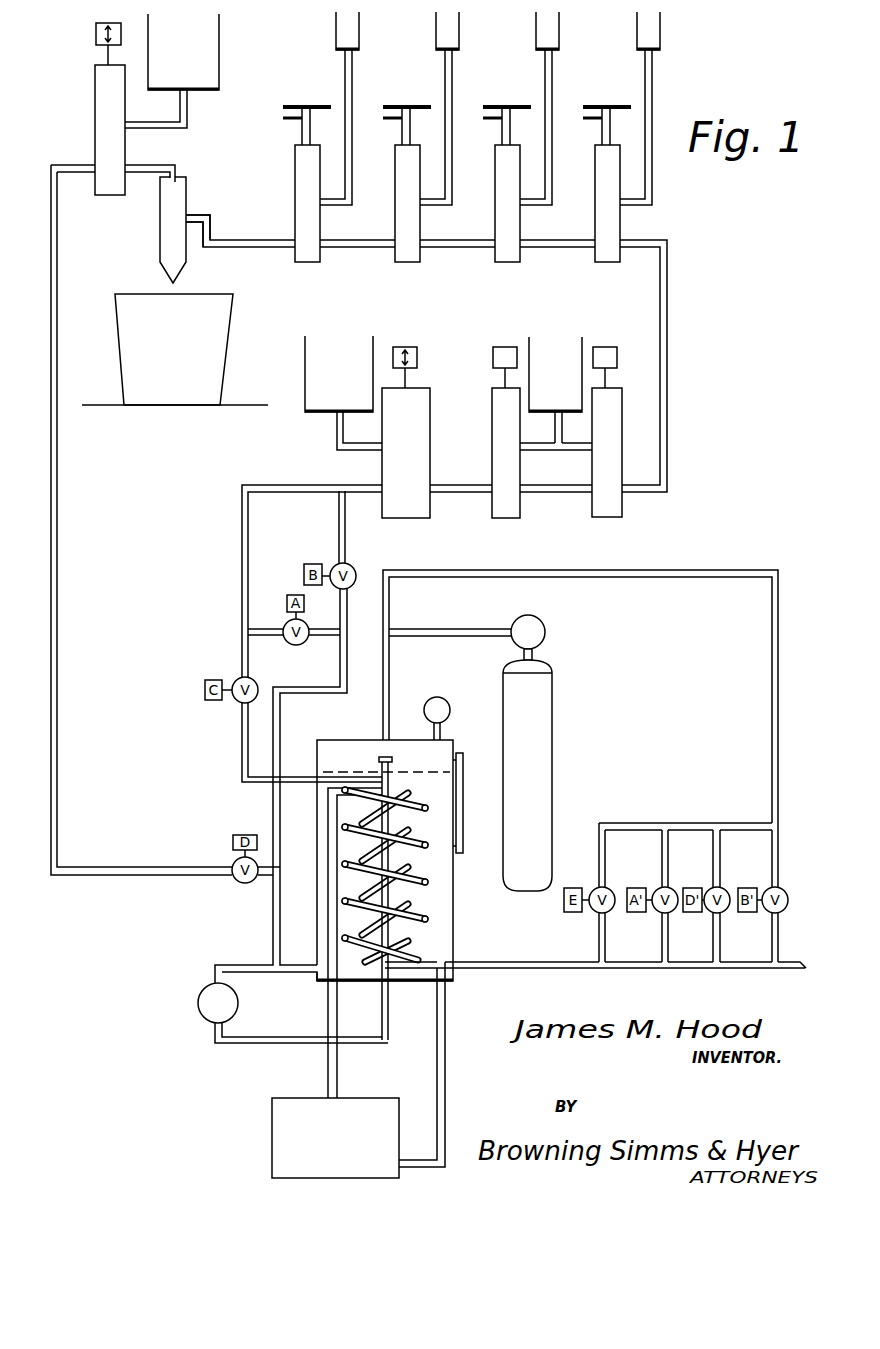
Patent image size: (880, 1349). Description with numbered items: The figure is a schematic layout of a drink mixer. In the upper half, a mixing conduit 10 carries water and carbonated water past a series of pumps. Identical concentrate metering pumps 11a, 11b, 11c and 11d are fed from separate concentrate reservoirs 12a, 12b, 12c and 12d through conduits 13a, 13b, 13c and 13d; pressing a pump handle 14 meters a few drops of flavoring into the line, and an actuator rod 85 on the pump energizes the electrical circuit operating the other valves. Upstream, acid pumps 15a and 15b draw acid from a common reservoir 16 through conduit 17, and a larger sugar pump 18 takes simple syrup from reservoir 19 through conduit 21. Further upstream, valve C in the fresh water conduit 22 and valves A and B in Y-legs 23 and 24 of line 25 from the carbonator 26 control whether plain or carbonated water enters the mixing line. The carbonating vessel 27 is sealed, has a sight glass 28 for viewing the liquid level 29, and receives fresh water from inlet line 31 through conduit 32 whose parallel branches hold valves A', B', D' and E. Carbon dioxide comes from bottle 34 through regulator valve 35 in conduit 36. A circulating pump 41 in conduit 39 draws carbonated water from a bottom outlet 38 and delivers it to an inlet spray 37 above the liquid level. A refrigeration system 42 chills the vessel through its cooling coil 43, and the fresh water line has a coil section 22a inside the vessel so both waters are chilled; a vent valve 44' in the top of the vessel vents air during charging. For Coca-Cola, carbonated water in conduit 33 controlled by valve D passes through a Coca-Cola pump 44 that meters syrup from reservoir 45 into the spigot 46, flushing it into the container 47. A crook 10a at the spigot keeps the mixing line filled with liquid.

The mixing conduit 10 is at (222, 246).
The crook 10a is at (212, 234).
The metering pump 11a is at (308, 258).
The metering pump 11b is at (408, 258).
The metering pump 11c is at (508, 258).
The metering pump 11d is at (608, 258).
The concentrate reservoir 12a is at (359, 24).
The concentrate reservoir 12b is at (459, 24).
The concentrate reservoir 12c is at (559, 24).
The concentrate reservoir 12d is at (660, 24).
The conduit 13a is at (353, 62).
The conduit 13b is at (453, 62).
The conduit 13c is at (553, 62).
The conduit 13d is at (653, 62).
The pump handle 14 is at (306, 104).
The acid pump 15a is at (505, 512).
The acid pump 15b is at (605, 515).
The acid reservoir 16 is at (583, 340).
The conduit 17 is at (556, 452).
The sugar pump 18 is at (424, 432).
The reservoir 19 is at (374, 345).
The conduit 21 is at (333, 432).
The fresh water conduit 22 is at (241, 753).
The coil section 22a is at (410, 903).
The Y-leg 23 is at (325, 640).
The Y-leg 24 is at (347, 616).
The line 25 is at (347, 673).
The carbonator 26 is at (556, 697).
The carbonating vessel 27 is at (455, 934).
The sight glass 28 is at (466, 797).
The liquid level 29 is at (428, 772).
The inlet line 31 is at (505, 969).
The conduit 32 is at (680, 577).
The conduit 33 is at (133, 867).
The carbon dioxide source 34 is at (540, 751).
The regulator valve 35 is at (548, 640).
The conduit 36 is at (430, 630).
The inlet spray 37 is at (382, 758).
The outlet 38 is at (292, 962).
The conduit 39 is at (277, 1035).
The pump 41 is at (200, 993).
The refrigeration system 42 is at (292, 1097).
The cooling coil 43 is at (428, 884).
The Coca-Cola pump 44 is at (82, 109).
The vent valve 44' is at (454, 707).
The reservoir 45 is at (208, 38).
The spigot 46 is at (178, 192).
The container 47 is at (225, 330).
The actuator rod 85 is at (283, 119).